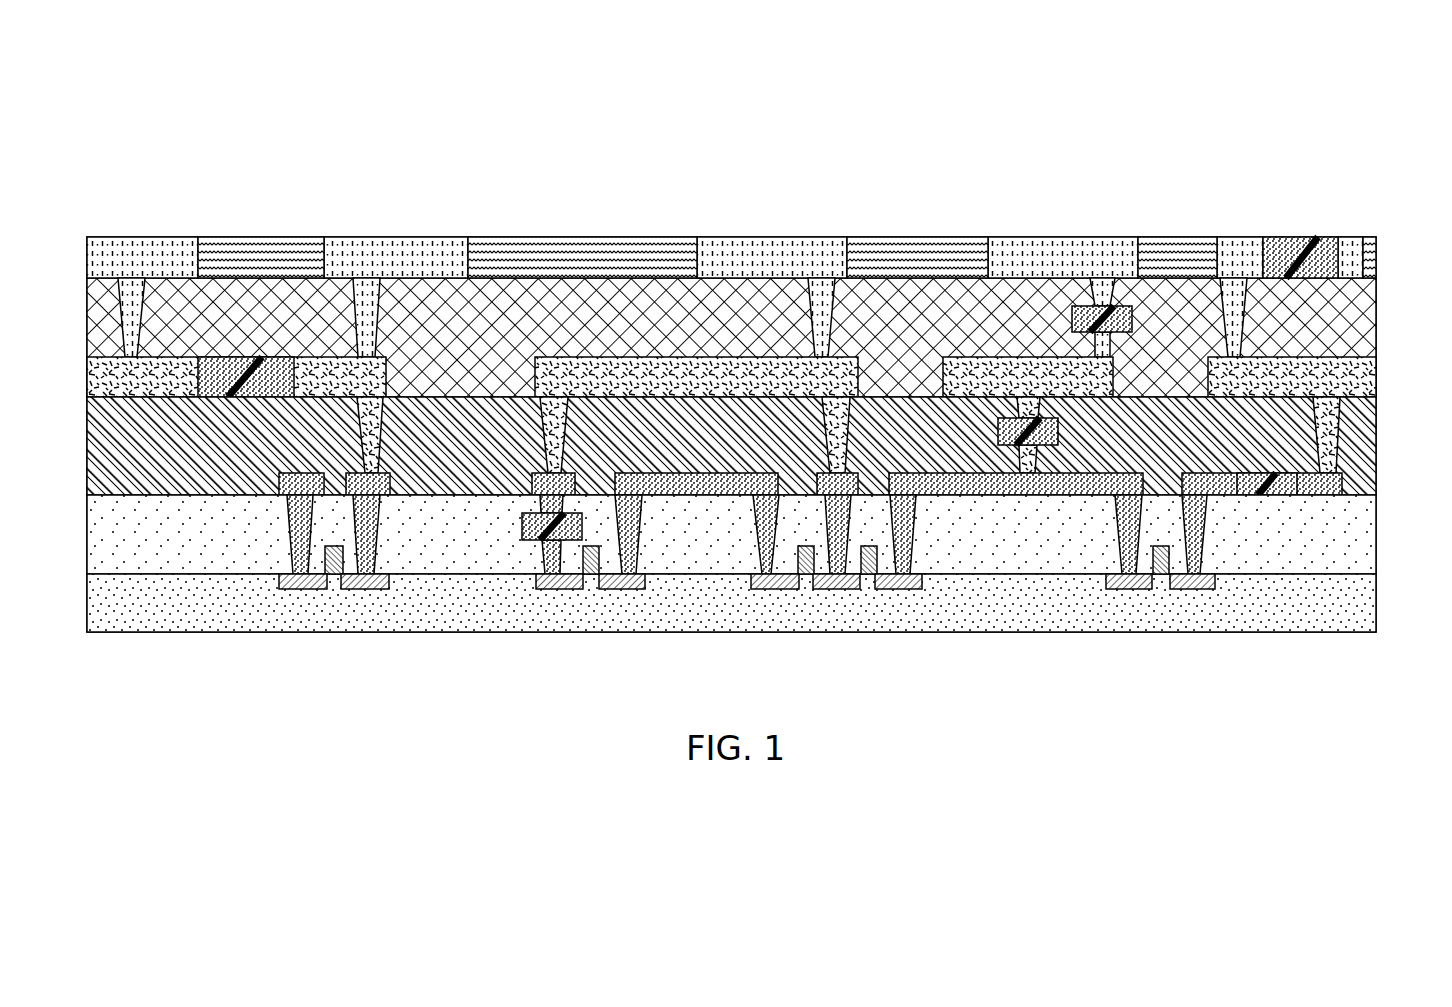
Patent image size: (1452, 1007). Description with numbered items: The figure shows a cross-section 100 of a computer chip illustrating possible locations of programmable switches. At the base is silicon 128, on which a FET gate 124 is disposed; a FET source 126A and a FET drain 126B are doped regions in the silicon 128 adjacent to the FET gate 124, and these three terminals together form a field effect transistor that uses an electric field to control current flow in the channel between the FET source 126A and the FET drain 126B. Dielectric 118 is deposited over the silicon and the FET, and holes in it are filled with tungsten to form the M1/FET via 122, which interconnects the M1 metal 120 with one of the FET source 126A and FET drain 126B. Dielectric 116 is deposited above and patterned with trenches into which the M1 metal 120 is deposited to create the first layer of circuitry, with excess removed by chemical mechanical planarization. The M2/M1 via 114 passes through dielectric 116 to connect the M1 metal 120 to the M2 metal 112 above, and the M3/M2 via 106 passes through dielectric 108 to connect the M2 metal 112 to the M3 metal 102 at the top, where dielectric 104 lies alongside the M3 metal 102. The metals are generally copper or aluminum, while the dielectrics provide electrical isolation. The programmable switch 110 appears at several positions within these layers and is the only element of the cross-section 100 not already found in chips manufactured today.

The cross-section 100 is at (232, 132).
The M3 metal 102 is at (799, 270).
The dielectric 104 is at (606, 270).
The M3/M2 via 106 is at (823, 315).
The dielectric 108 is at (487, 349).
The programmable switch 110 is at (280, 368).
The M2 metal 112 is at (171, 390).
The M2/M1 via 114 is at (1333, 437).
The dielectric 116 is at (171, 463).
The dielectric 118 is at (171, 551).
The M1 metal 120 is at (1065, 485).
The M1/FET via 122 is at (910, 522).
The FET gate 124 is at (592, 574).
The FET source 126A is at (300, 589).
The FET drain 126B is at (370, 589).
The silicon 128 is at (171, 615).